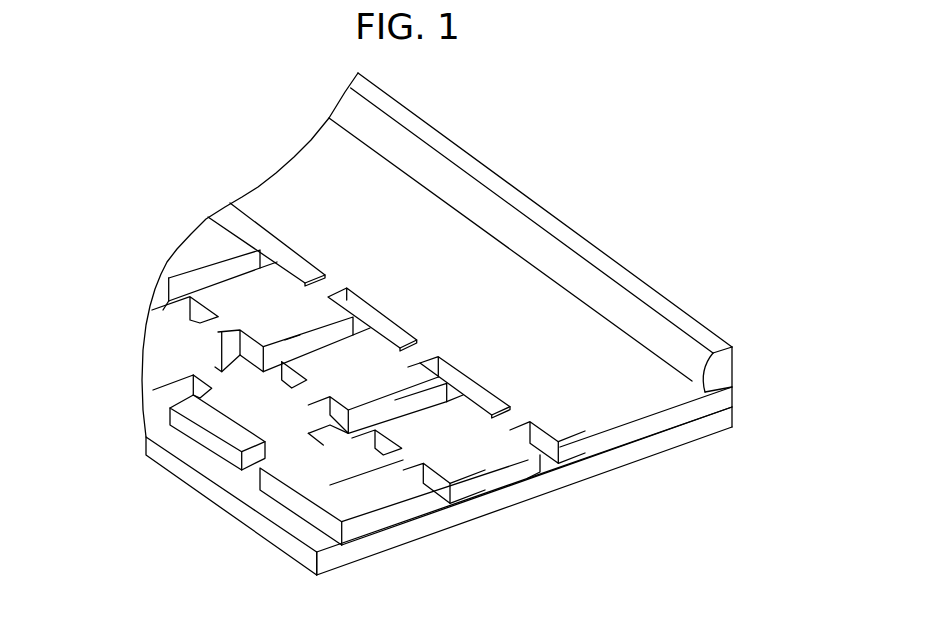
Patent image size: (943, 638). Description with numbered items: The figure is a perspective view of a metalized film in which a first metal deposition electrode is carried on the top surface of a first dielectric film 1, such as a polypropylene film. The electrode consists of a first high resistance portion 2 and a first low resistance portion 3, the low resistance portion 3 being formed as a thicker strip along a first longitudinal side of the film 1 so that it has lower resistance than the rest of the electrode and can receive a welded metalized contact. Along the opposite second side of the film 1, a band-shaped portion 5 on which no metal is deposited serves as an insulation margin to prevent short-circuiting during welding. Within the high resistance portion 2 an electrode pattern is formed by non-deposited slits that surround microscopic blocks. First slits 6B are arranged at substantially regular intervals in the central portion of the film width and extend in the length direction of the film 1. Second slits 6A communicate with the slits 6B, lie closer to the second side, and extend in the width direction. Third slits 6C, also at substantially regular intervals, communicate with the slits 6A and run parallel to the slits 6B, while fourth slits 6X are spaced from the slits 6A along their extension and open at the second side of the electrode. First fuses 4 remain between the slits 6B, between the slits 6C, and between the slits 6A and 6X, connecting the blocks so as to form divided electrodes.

The first dielectric film 1 is at (349, 551).
The first high resistance portion 2 is at (633, 433).
The first low resistance portion 3 is at (727, 370).
The first fuses 4 is at (222, 328).
The band-shaped portion 5 is at (316, 553).
The second slits 6A is at (298, 344).
The first slits 6B is at (547, 463).
The third slits 6C is at (433, 492).
The fourth slits 6X is at (162, 407).